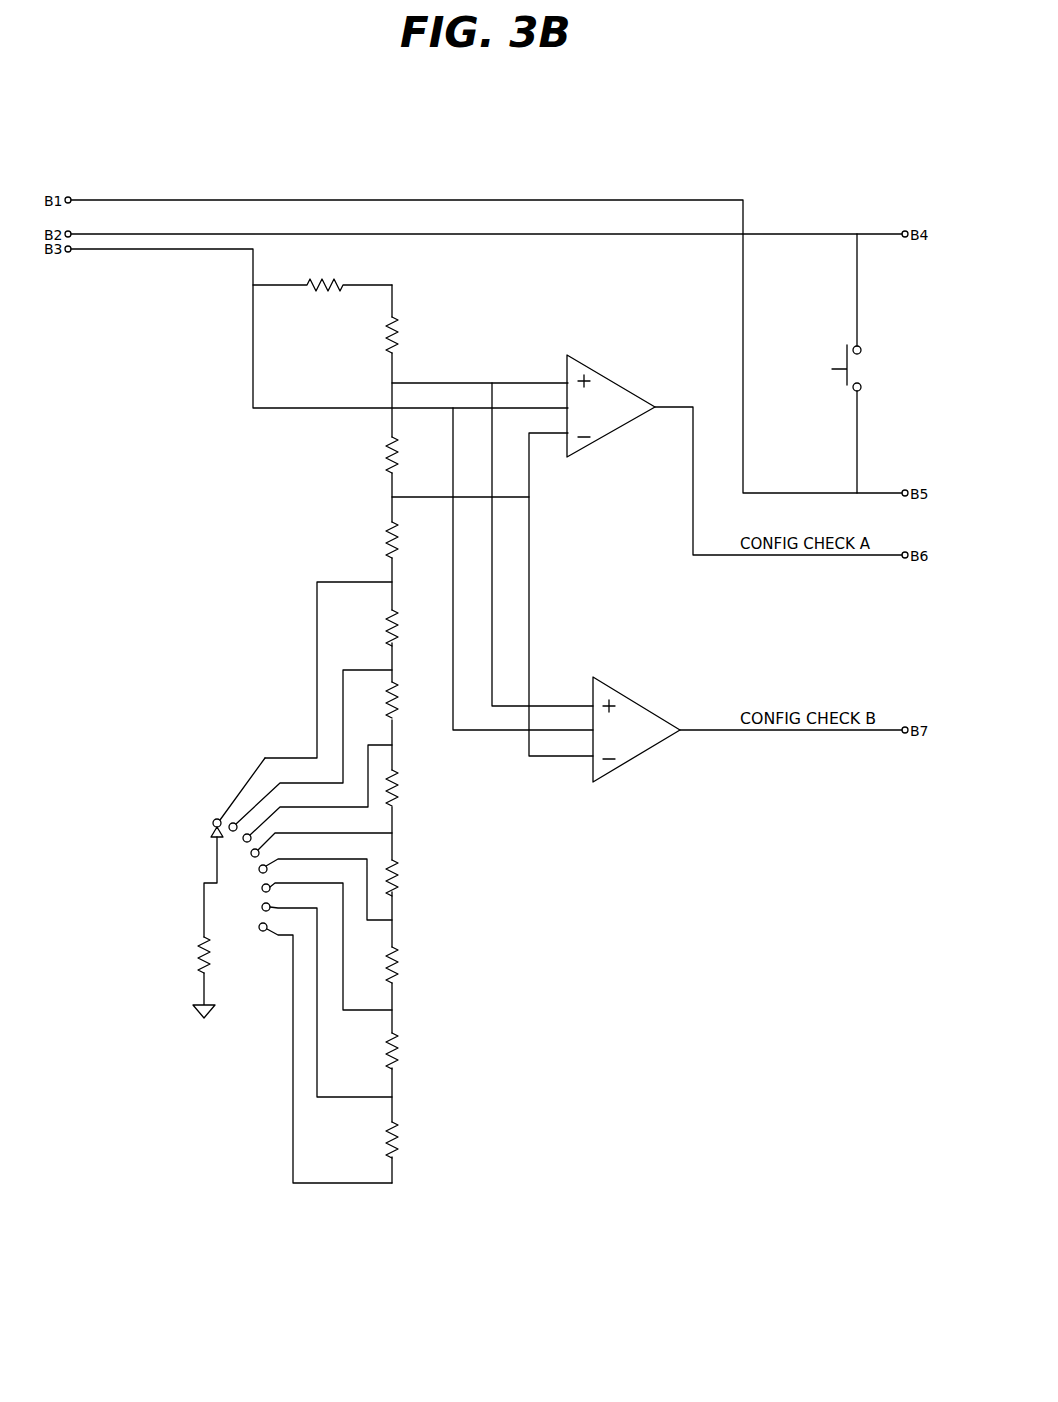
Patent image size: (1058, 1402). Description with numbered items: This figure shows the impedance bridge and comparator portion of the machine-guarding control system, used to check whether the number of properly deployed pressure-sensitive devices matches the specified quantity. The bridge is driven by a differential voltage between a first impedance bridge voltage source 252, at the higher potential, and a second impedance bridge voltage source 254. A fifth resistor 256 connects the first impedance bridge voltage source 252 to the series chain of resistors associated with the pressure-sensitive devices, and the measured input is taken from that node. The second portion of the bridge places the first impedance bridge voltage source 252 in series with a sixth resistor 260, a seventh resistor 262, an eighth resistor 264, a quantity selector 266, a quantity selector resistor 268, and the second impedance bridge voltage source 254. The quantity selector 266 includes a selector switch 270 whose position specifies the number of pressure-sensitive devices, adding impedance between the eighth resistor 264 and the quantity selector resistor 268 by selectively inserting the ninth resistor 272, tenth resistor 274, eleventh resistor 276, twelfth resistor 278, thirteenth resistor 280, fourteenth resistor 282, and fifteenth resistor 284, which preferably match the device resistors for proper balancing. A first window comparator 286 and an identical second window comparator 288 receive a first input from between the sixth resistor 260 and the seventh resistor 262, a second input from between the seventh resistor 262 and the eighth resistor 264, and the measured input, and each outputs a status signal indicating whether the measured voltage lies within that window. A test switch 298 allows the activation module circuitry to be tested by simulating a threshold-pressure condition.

The first impedance bridge voltage source 252 is at (428, 258).
The second impedance bridge voltage source 254 is at (198, 1009).
The resistor R5 256 is at (316, 278).
The resistor R6 260 is at (399, 334).
The resistor R7 262 is at (399, 454).
The resistor R8 264 is at (399, 538).
The quantity selector 266 is at (219, 773).
The quantity selector resistor 268 is at (202, 960).
The selector switch 270 is at (206, 880).
The resistor R9 272 is at (399, 626).
The resistor R10 274 is at (399, 700).
The resistor R11 276 is at (399, 808).
The resistor R12 278 is at (399, 893).
The resistor R13 280 is at (399, 984).
The resistor R14 282 is at (399, 1069).
The resistor R15 284 is at (399, 1144).
The first window comparator 286 is at (623, 388).
The second window comparator 288 is at (628, 700).
The test switch 298 is at (873, 355).